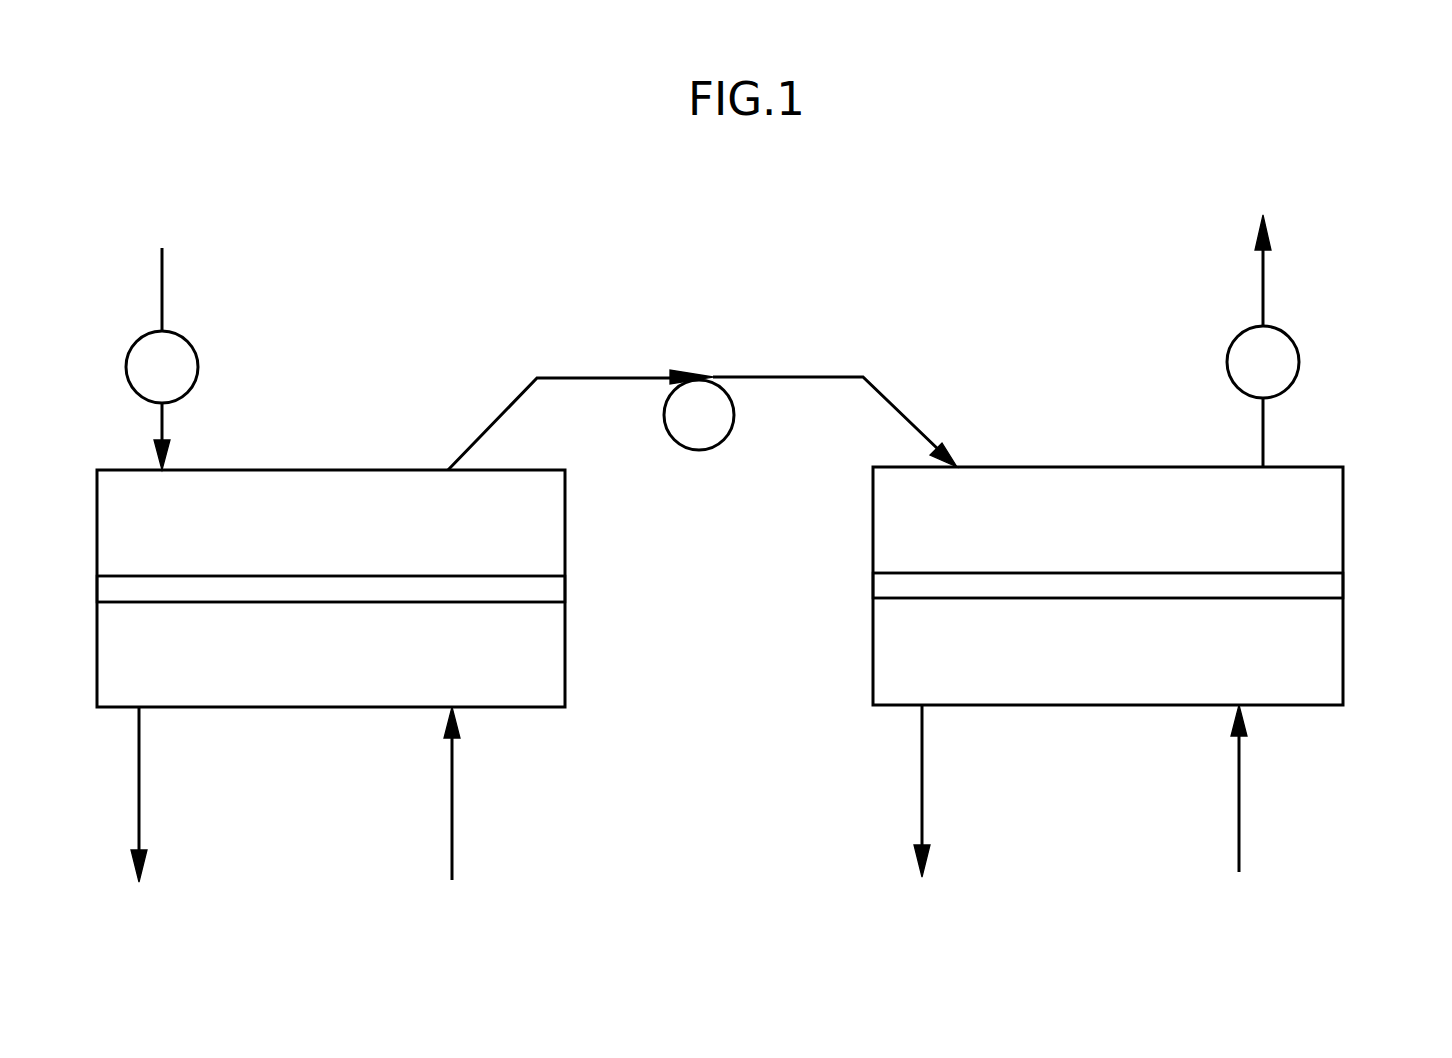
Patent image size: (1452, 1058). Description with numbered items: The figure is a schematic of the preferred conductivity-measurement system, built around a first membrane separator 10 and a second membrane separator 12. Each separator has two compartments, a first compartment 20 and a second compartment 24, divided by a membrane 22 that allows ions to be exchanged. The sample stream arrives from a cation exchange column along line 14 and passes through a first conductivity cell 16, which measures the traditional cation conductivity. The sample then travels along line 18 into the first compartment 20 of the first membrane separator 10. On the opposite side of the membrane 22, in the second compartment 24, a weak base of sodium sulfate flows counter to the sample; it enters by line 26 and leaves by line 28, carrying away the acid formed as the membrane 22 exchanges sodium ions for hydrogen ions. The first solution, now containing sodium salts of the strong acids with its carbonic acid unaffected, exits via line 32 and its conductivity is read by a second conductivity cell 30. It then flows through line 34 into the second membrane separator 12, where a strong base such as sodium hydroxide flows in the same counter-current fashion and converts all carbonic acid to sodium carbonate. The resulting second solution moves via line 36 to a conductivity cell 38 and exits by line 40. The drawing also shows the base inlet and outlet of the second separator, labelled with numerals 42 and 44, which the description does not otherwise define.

The first membrane separator 10 is at (574, 504).
The second membrane separator 12 is at (1360, 519).
The line 14 is at (164, 286).
The first conductivity cell 16 is at (199, 362).
The line 18 is at (164, 424).
The first compartment 20 is at (567, 541).
The membrane 22 is at (567, 589).
The second compartment 24 is at (567, 637).
The line 26 is at (454, 790).
The line 28 is at (141, 757).
The second conductivity cell 30 is at (706, 450).
The line 32 is at (597, 379).
The line 34 is at (888, 401).
The line 36 is at (1265, 440).
The conductivity cell 38 is at (1300, 358).
The line 40 is at (1265, 293).
The sweep inlet line of second unit 42 is at (1241, 782).
The permeate outlet line of second unit 44 is at (924, 773).